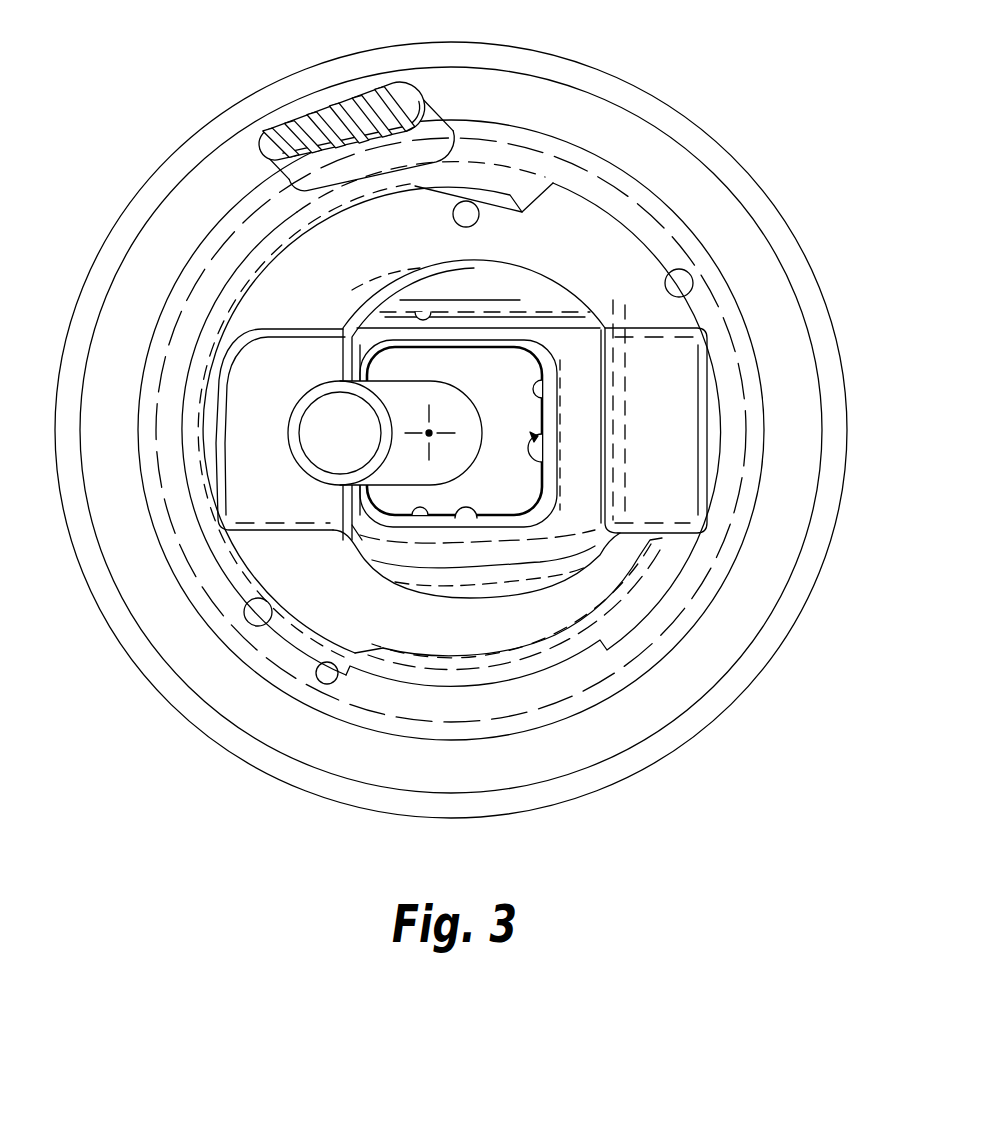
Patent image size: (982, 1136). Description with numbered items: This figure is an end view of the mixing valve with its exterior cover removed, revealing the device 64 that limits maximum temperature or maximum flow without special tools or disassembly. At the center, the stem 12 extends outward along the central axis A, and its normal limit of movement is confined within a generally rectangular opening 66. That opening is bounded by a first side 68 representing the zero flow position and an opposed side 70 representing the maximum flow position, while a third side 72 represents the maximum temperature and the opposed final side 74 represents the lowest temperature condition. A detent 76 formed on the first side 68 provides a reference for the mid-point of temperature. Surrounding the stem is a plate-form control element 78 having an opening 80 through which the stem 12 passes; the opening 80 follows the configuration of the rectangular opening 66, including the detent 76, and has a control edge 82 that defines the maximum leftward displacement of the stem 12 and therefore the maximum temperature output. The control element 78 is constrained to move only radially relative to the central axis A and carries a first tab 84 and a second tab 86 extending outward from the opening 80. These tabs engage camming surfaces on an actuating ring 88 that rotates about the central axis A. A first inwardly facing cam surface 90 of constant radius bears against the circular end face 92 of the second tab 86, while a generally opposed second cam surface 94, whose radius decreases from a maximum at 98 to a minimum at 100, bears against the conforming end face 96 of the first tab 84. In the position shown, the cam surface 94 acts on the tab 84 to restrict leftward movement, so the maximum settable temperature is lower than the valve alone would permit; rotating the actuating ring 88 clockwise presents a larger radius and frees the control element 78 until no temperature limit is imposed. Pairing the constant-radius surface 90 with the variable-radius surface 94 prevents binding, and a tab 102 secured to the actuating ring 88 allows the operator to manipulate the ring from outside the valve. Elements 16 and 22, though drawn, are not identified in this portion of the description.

The stem 12 is at (327, 382).
The gasket / seal ring 16 is at (573, 347).
The inner ring 22 is at (523, 367).
The device 64 is at (140, 578).
The rectangular opening 66 is at (543, 460).
The first side 68 is at (425, 520).
The opposed side 70 is at (470, 340).
The third side 72 is at (377, 530).
The final side 74 is at (543, 395).
The detent 76 is at (470, 518).
The control element 78 is at (451, 256).
The opening 80 is at (428, 318).
The control edge 82 is at (377, 340).
The first tab 84 is at (243, 462).
The second tab 86 is at (678, 478).
The actuating ring 88 is at (668, 200).
The first cam surface 90 is at (691, 298).
The end face 92 is at (704, 515).
The second cam surface 94 is at (265, 602).
The end face 96 is at (210, 418).
The maximum radius point 98 is at (333, 682).
The minimum radius point 100 is at (484, 200).
The tab 102 is at (310, 133).
The central axis A is at (429, 433).